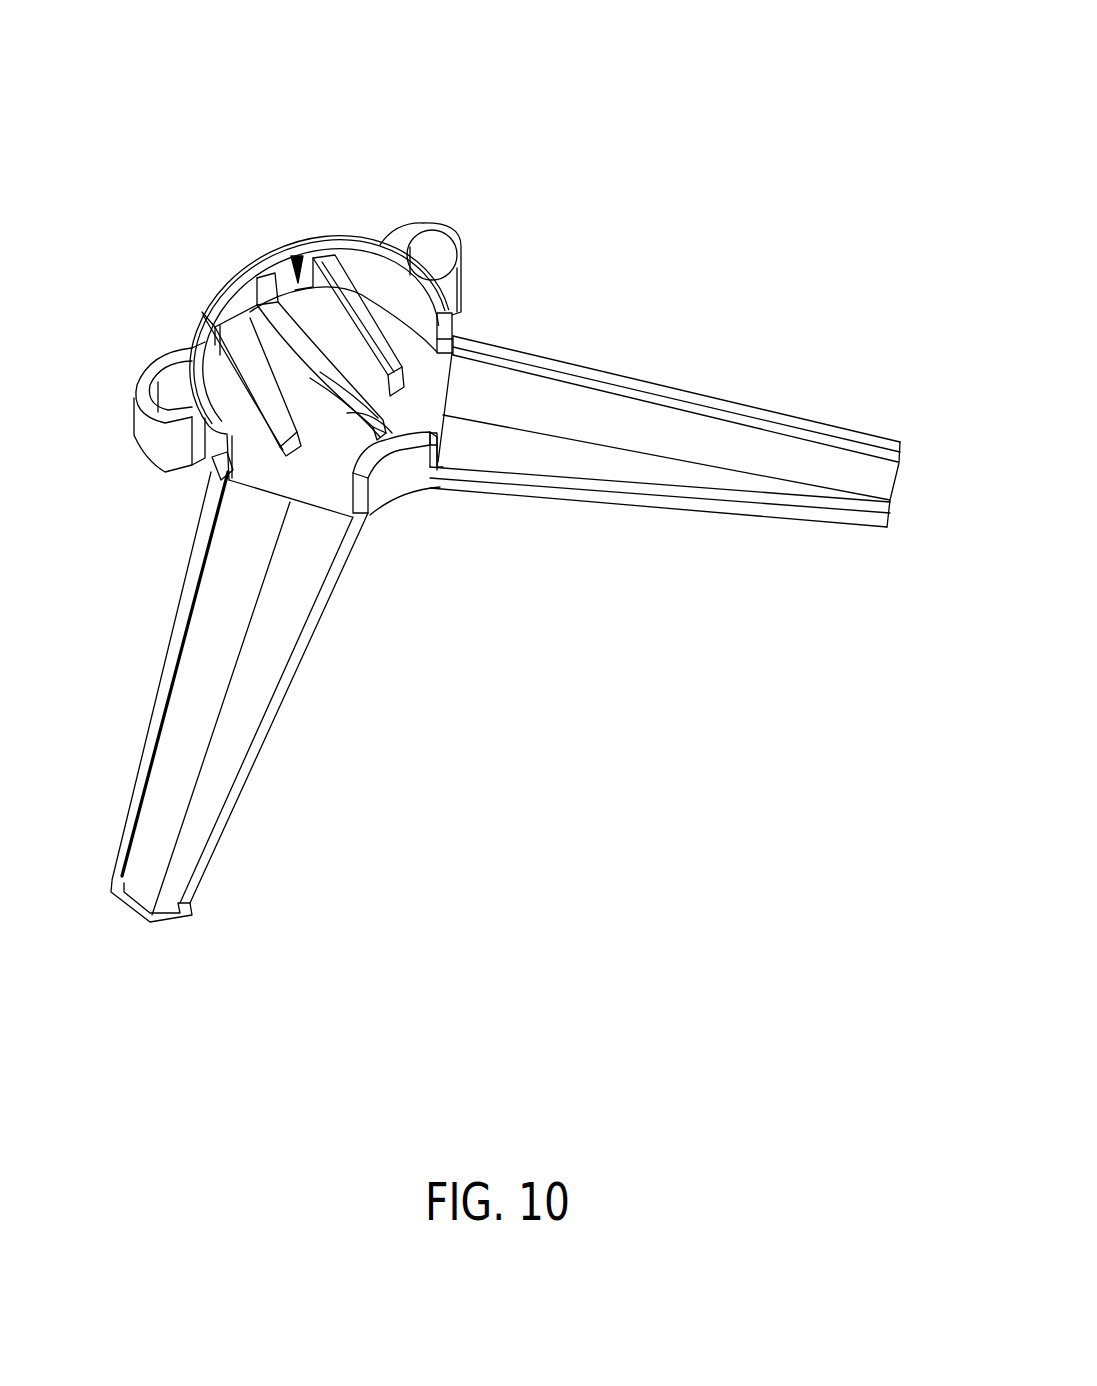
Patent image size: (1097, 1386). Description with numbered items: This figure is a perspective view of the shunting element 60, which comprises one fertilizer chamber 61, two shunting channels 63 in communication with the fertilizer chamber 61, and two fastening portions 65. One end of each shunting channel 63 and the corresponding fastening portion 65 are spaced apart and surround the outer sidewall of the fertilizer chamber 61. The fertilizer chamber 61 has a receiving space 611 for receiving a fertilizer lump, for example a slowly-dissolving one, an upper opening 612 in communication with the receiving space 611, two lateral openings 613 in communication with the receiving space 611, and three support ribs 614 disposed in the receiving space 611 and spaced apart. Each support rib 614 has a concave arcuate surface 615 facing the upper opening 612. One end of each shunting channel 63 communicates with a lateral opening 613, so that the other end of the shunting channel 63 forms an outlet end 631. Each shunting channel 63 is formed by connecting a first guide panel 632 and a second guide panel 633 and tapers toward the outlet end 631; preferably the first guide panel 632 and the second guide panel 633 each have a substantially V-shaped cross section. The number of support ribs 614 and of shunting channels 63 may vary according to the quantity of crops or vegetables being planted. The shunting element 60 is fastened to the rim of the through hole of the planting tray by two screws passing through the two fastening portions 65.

The shunting element 60 is at (231, 80).
The fertilizer chamber 61 is at (350, 247).
The receiving space 611 is at (296, 258).
The upper opening 612 is at (237, 289).
The lateral opening 613 is at (463, 327).
The support rib 614 is at (223, 340).
The concave arcuate surface 615 is at (393, 347).
The shunting channel 63 is at (505, 662).
The outlet end 631 is at (897, 473).
The first guide panel 632 is at (677, 427).
The second guide panel 633 is at (670, 473).
The fastening portion 65 is at (451, 244).